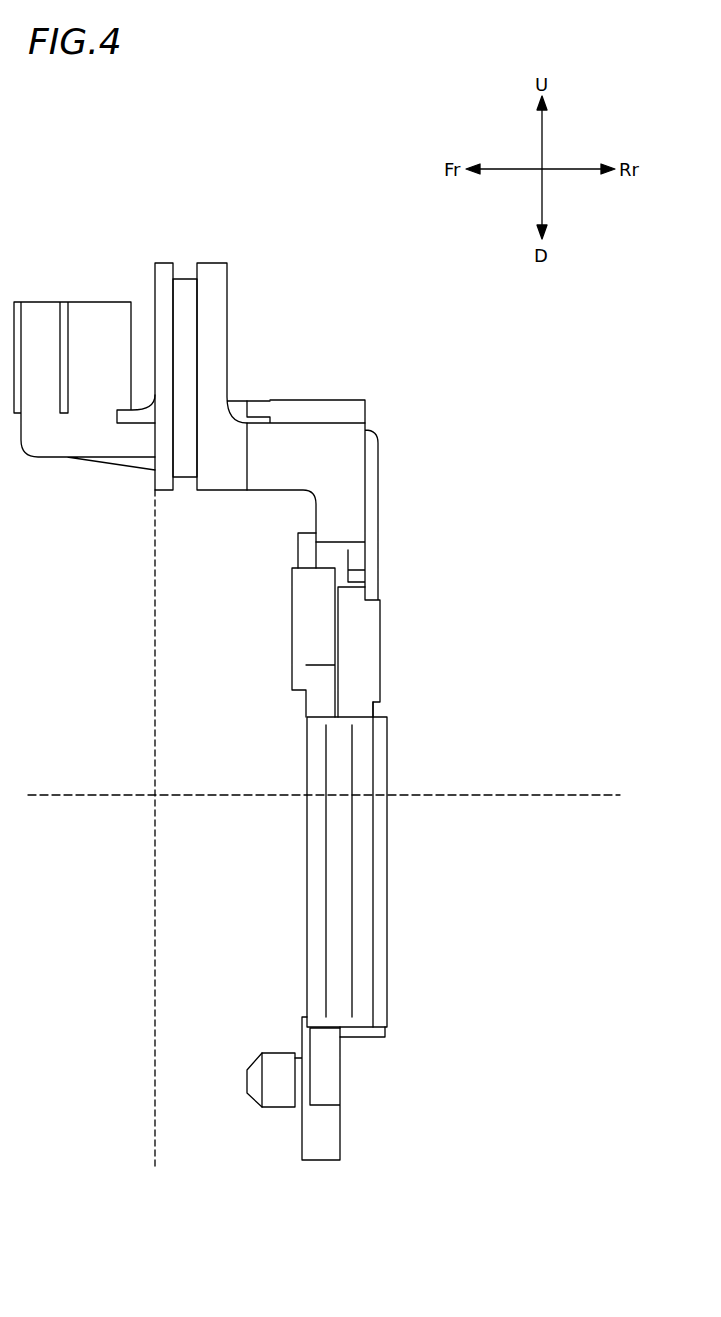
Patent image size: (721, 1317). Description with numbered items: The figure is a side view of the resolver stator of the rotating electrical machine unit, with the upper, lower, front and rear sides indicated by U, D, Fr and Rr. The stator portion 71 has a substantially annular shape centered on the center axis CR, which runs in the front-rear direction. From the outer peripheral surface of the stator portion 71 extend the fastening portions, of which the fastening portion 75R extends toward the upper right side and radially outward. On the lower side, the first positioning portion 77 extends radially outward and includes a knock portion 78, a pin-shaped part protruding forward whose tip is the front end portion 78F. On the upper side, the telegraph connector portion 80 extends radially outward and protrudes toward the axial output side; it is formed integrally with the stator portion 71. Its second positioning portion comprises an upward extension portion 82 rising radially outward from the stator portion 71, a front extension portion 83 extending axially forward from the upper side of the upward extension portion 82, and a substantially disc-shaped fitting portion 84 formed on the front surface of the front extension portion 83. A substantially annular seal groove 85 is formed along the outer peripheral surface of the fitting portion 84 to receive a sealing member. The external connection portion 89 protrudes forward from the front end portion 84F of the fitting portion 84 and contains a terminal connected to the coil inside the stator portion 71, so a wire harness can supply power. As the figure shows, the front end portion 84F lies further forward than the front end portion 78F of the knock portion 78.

The stator portion 71 is at (358, 918).
The fastening portion 75R is at (303, 617).
The first positioning portion 77 is at (308, 1150).
The knock portion 78 is at (273, 1067).
The front end portion of the knock portion 78F is at (247, 1082).
The telegraph connector portion 80 is at (346, 490).
The upward extension portion 82 is at (345, 498).
The front extension portion 83 is at (265, 452).
The fitting portion 84 is at (215, 316).
The front end portion of the fitting portion 84F is at (155, 290).
The seal groove 85 is at (184, 278).
The external connection portion 89 is at (45, 328).
The center axis CR is at (571, 792).